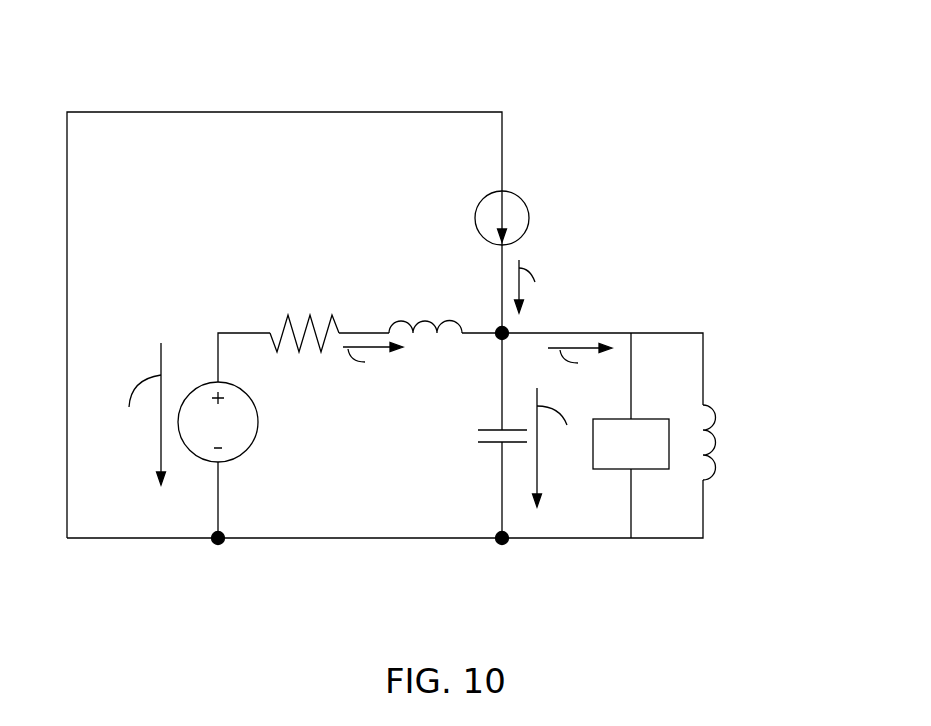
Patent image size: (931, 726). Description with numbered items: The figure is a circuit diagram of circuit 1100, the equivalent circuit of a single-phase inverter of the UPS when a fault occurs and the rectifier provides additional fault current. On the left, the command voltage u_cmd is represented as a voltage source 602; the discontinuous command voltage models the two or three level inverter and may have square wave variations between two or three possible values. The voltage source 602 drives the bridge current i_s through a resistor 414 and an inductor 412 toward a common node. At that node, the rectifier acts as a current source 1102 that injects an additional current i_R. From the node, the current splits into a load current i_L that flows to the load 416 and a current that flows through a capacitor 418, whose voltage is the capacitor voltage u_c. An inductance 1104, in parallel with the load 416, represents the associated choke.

The circuit 1100 is at (658, 82).
The current source 1102 is at (529, 219).
The resistor 414 is at (283, 322).
The inductor 412 is at (403, 316).
The capacitor 418 is at (488, 428).
The load 416 is at (648, 419).
The inductance 1104 is at (718, 405).
The voltage source 602 is at (258, 425).